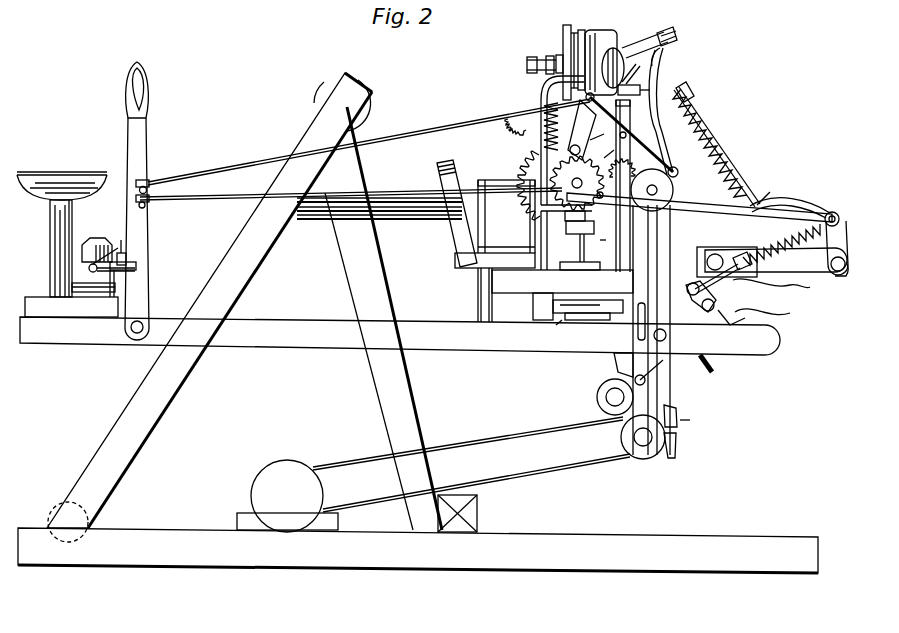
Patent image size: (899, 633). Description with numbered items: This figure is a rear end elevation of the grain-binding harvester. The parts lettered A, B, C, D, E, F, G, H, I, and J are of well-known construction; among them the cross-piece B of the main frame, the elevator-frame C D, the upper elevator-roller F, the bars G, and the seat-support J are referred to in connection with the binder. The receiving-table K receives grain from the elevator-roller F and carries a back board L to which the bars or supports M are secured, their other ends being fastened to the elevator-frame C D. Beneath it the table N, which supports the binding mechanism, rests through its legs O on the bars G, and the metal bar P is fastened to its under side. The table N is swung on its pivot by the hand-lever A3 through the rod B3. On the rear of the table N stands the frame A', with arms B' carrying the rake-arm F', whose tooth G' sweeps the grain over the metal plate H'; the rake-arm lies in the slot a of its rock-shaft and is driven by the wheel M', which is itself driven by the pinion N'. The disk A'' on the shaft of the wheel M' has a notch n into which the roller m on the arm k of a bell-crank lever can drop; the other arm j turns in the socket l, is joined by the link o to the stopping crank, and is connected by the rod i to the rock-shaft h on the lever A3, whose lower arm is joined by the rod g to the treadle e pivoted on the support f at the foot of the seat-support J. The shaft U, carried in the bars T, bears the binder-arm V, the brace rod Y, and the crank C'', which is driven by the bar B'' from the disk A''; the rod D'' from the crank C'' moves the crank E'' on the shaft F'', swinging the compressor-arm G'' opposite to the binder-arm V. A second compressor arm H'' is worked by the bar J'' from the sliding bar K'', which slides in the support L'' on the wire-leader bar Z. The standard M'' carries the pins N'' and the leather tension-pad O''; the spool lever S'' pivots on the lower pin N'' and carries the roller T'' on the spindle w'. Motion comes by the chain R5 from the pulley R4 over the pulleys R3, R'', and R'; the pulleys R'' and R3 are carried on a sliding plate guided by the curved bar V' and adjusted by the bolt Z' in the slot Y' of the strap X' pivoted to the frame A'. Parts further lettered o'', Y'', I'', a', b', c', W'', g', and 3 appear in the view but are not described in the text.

The main-frame part A is at (418, 550).
The cross-piece of the main frame B is at (357, 513).
The elevator-frame C is at (209, 300).
The elevator-frame D is at (383, 318).
The machine part E is at (68, 506).
The upper elevator-roller F is at (334, 99).
The bars G is at (400, 336).
The machine part H is at (71, 307).
The machine part I is at (62, 194).
The seat-support J is at (49, 248).
The receiving-table K is at (495, 260).
The back board L is at (456, 213).
The bars or supports M is at (379, 217).
The table N is at (562, 281).
The legs or supports O is at (476, 295).
The treadle e is at (95, 250).
The support f is at (93, 292).
The rod or link g is at (112, 247).
The vertical rock-shaft h is at (125, 250).
The rod i is at (369, 142).
The hand-lever A3 is at (144, 201).
The rod B3 is at (351, 183).
The arm B' is at (571, 185).
The bar B'' is at (703, 209).
The rake-arm F' is at (518, 185).
The tooth or arm G' is at (506, 216).
The metal plate H' is at (506, 241).
The anti-friction roller m is at (508, 138).
The binder-arm V is at (544, 126).
The bracket o'' is at (562, 140).
The wheel or disk A'' is at (577, 183).
The wheel M' is at (621, 168).
The pulley R' is at (652, 190).
The depression or notch n is at (601, 193).
The crank C'' is at (839, 248).
The bars T is at (776, 260).
The rod D'' is at (757, 258).
The compressor arm or lever H'' is at (785, 219).
The crank E'' is at (721, 279).
The compressor arm or lever G'' is at (774, 289).
The shaft F'' is at (756, 308).
The shaft U is at (841, 280).
The link Y'' is at (731, 318).
The sliding bar K'' is at (717, 147).
The bar J'' is at (710, 143).
The stop 3 is at (691, 97).
The pin I'' is at (766, 189).
The brace rod or bar Y is at (722, 121).
The arm of bell-crank lever k is at (640, 137).
The arm of bell-crank lever j is at (582, 130).
The socket or support l is at (597, 137).
The link or rod o is at (629, 132).
The frame A' is at (610, 150).
The bar Z is at (649, 33).
The support L'' is at (676, 56).
The piece of leather O'' is at (604, 62).
The spindles or pins N'' is at (598, 48).
The standard M'' is at (562, 62).
The small spool or roller T'' is at (546, 52).
The lever S'' is at (534, 65).
The metal bar P is at (631, 74).
The pinion N' is at (635, 84).
The pipe a' is at (566, 237).
The valve b' is at (584, 241).
The plate c' is at (583, 255).
The plate W'' is at (578, 306).
The bar or strap X' is at (640, 330).
The slot Y' is at (643, 331).
The curved metal bar V' is at (690, 420).
The set screw or bolt Z' is at (623, 359).
The spindle w' is at (650, 370).
The long vertical slot a is at (698, 367).
The pin g' is at (558, 334).
The pulley R'' is at (605, 397).
The pulley R3 is at (641, 437).
The pulley R4 is at (287, 496).
The cord or chain R5 is at (471, 464).